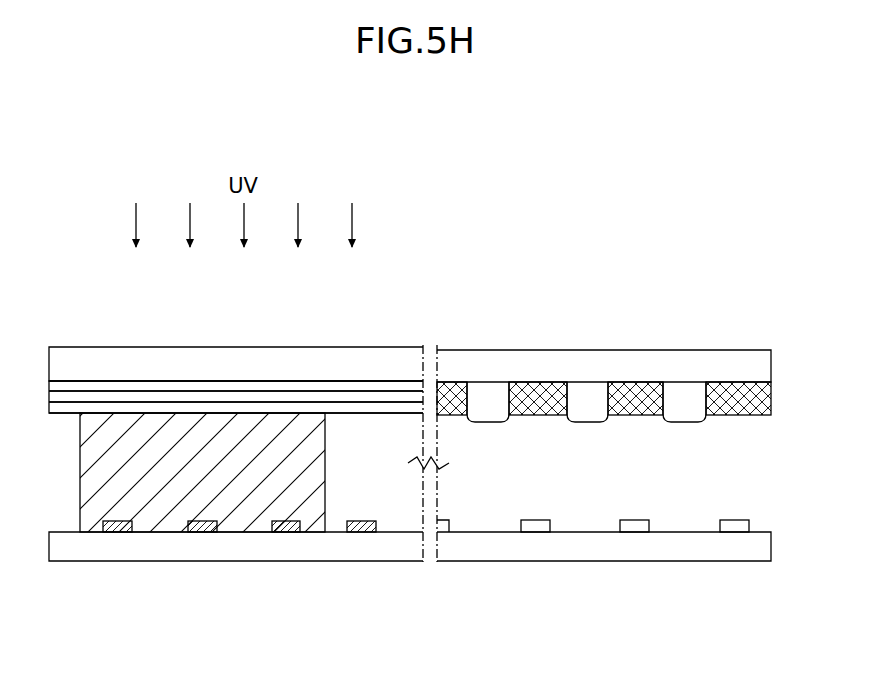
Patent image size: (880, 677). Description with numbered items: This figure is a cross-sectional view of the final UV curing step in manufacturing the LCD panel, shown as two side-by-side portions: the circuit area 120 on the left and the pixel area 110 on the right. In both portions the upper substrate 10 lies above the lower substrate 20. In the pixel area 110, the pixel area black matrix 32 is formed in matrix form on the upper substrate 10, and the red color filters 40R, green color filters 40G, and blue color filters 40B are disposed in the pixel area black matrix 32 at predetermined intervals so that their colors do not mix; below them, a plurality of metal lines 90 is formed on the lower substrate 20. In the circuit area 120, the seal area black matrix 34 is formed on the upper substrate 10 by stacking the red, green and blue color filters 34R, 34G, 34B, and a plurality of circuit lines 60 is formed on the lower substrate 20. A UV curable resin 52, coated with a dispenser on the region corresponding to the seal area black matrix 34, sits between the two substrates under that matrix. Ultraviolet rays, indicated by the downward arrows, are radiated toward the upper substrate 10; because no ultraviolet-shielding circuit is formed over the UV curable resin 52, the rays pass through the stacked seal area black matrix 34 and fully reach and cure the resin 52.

The circuit area 120 is at (79, 312).
The pixel area 110 is at (583, 222).
The upper substrate 10 is at (122, 362).
The seal area black matrix 34 is at (385, 302).
The blue color filter 34B is at (242, 386).
The green color filter 34G is at (302, 398).
The red color filter 34R is at (355, 409).
The pixel area black matrix 32 is at (447, 378).
The red color filter 40R is at (488, 390).
The green color filter 40G is at (590, 390).
The blue color filter 40B is at (685, 390).
The UV curable resin 52 is at (158, 522).
The lower substrate 20 is at (218, 547).
The circuit lines 60 is at (290, 533).
The metal lines 90 is at (530, 533).